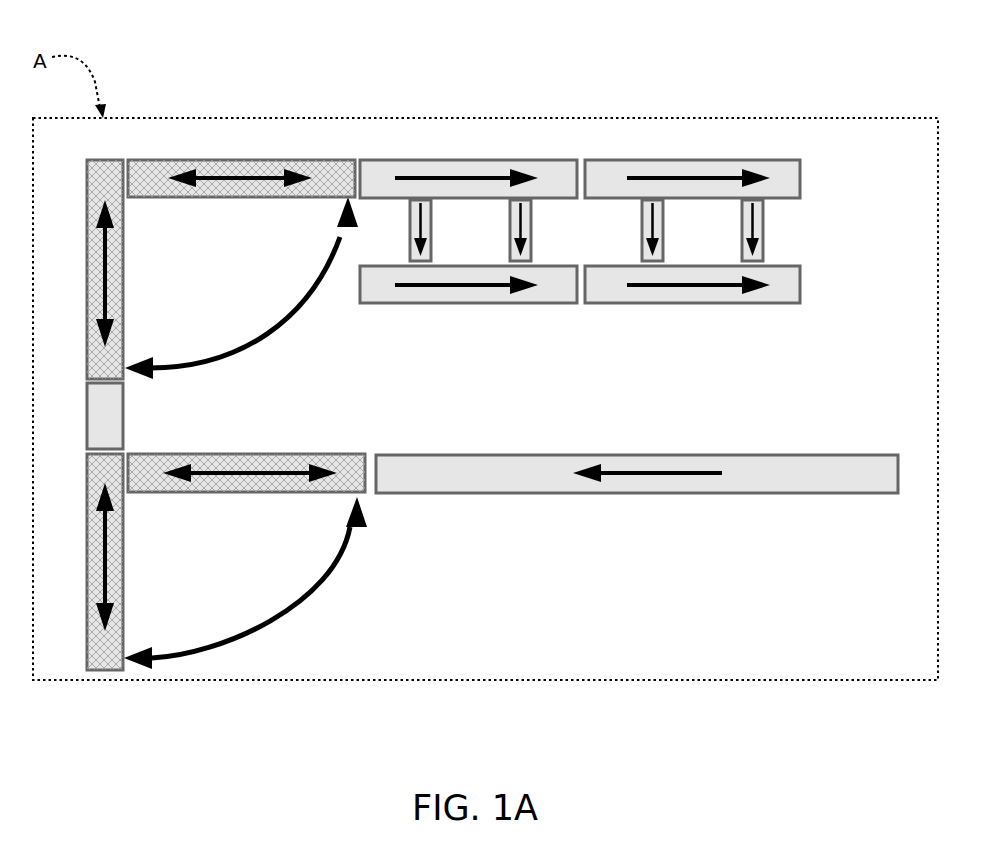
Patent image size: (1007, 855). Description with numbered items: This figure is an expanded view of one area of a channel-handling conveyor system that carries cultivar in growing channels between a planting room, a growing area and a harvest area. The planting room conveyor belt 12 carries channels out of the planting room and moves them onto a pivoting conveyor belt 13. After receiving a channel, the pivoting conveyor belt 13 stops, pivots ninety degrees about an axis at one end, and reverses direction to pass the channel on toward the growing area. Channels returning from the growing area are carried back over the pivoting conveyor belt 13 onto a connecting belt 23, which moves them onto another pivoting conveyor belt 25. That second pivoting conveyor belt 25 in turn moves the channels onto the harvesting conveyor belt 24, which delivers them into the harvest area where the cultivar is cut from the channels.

The planting room conveyor belt 12 is at (445, 478).
The pivoting conveyor belt 13 is at (250, 455).
The connecting belt 23 is at (123, 418).
The harvesting conveyor belt 24 is at (555, 160).
The pivoting conveyor belt 25 is at (240, 160).